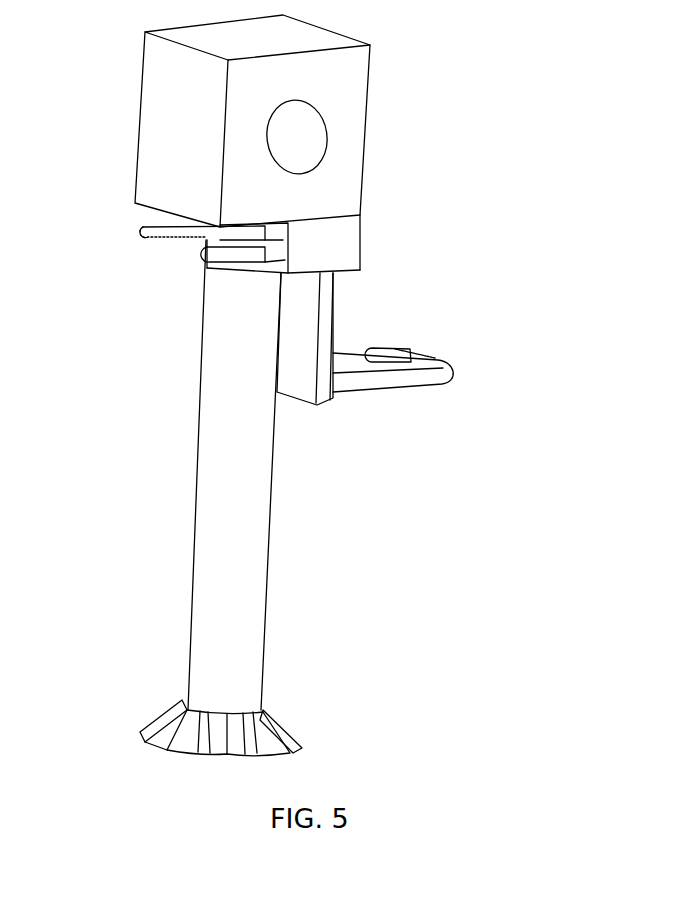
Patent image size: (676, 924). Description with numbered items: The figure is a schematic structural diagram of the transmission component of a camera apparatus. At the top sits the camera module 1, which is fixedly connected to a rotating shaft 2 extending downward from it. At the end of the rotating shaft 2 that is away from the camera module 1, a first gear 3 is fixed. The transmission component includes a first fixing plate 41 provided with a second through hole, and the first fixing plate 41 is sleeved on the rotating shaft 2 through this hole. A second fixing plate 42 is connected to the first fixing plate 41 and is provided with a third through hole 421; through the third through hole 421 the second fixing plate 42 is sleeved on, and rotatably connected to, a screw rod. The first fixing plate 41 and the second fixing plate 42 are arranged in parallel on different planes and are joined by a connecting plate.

The camera module 1 is at (195, 135).
The rotating shaft 2 is at (237, 545).
The first gear 3 is at (183, 720).
The first fixing plate 41 is at (327, 257).
The second fixing plate 42 is at (350, 370).
The third through hole 421 is at (443, 361).